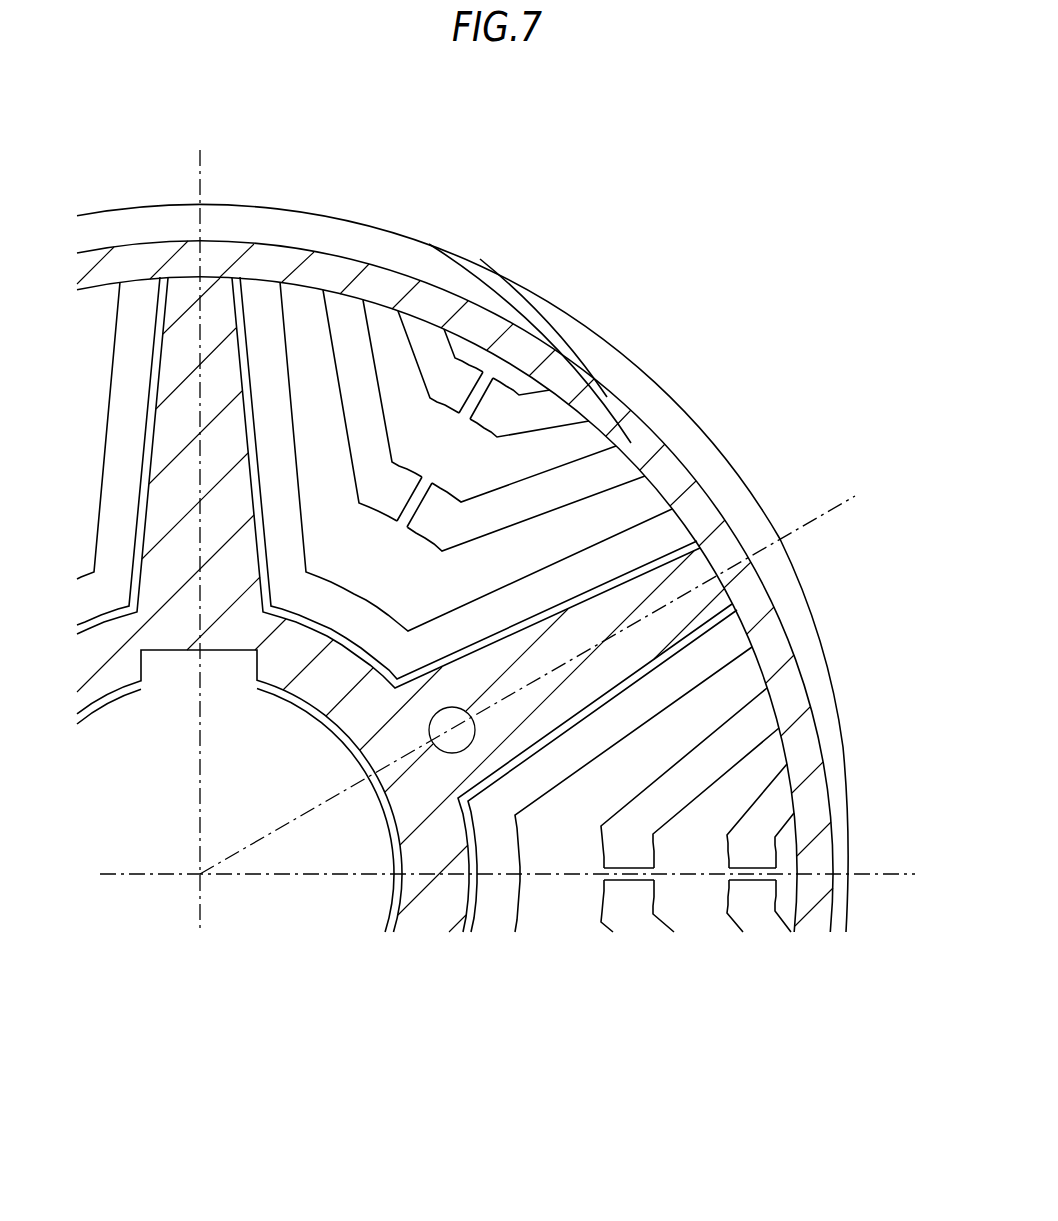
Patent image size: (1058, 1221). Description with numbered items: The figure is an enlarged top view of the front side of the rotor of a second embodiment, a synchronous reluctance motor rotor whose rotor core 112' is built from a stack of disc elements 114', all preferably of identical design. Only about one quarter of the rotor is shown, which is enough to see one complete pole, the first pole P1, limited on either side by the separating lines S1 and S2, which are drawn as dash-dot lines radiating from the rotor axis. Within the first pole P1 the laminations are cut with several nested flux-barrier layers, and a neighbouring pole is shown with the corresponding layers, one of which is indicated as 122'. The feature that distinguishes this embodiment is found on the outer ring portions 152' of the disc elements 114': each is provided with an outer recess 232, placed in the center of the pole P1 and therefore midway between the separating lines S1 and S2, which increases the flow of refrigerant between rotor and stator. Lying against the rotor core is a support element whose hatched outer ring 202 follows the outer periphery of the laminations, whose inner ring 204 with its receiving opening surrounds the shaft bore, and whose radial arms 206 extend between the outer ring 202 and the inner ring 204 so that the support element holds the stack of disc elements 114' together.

The rotor core 112' is at (479, 568).
The disc elements 114' is at (455, 586).
The outer ring portions 152' is at (573, 343).
The outer recess 232 is at (527, 318).
The outer ring 202 is at (794, 676).
The inner ring 204 is at (422, 853).
The radial arms 206 is at (578, 692).
The flux barrier layer 122' is at (493, 315).
The first pole P1 is at (466, 438).
The separating line S1 is at (195, 155).
The separating line S2 is at (828, 510).